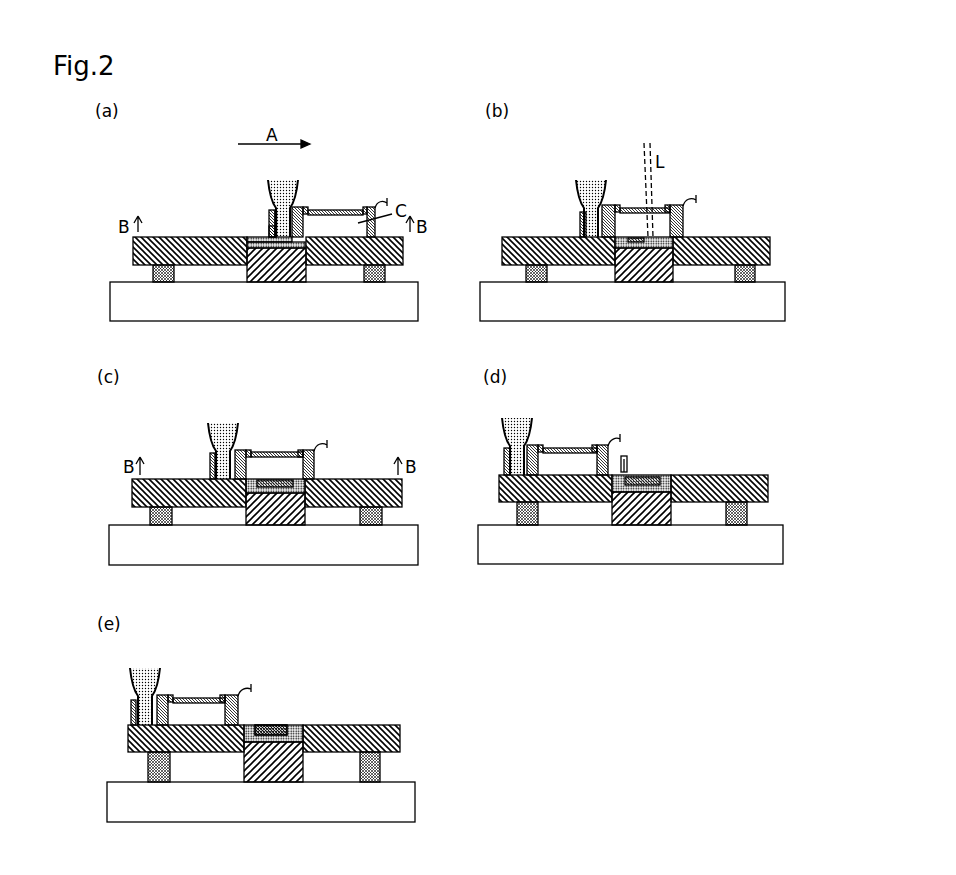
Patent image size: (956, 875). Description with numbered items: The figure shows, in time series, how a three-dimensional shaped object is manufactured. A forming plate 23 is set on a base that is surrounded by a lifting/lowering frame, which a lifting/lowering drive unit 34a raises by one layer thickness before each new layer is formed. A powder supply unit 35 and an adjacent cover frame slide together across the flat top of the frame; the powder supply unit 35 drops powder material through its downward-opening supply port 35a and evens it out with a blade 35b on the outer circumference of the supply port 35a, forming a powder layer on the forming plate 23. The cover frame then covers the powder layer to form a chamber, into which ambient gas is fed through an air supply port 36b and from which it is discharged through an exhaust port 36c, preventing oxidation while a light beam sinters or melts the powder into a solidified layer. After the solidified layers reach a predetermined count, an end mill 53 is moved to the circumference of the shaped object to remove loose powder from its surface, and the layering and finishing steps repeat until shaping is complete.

The forming plate 23 is at (255, 245).
The lifting/lowering drive unit 34a is at (152, 273).
The powder supply unit 35 is at (268, 183).
The supply port 35a is at (270, 226).
The blade 35b is at (272, 212).
The air supply port 36b is at (300, 212).
The exhaust port 36c is at (373, 208).
The end mill 53 is at (627, 456).